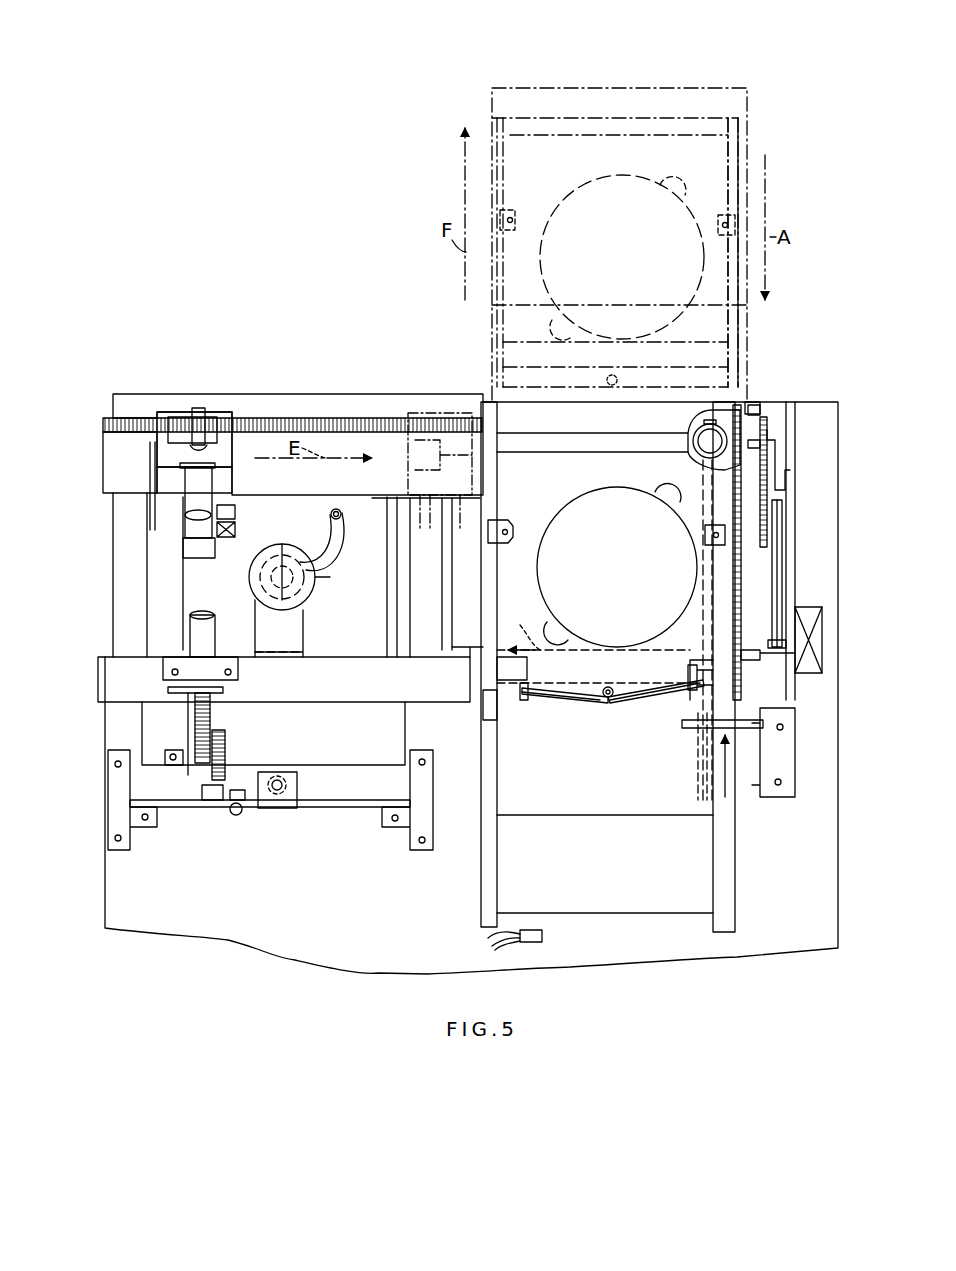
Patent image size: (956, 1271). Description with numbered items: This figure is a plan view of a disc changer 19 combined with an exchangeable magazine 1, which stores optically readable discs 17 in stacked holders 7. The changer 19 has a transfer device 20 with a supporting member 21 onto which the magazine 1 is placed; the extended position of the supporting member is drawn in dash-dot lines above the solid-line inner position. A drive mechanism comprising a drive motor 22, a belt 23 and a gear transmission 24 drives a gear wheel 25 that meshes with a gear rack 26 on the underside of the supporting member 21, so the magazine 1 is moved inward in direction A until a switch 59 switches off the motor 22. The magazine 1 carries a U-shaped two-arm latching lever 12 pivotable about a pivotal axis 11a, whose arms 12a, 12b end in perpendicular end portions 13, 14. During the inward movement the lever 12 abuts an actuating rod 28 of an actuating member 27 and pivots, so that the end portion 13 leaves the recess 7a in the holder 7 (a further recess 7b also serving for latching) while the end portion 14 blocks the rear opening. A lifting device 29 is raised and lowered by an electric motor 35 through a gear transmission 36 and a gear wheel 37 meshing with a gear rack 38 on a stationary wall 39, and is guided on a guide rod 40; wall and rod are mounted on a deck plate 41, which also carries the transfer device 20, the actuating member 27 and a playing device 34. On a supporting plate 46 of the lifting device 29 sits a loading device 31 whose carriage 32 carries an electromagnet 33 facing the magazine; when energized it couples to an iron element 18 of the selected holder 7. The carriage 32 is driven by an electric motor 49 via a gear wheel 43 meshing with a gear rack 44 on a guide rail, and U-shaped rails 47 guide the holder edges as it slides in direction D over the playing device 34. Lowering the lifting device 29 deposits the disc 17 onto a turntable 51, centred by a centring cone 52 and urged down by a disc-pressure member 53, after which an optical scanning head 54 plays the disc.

The magazine 1 is at (497, 117).
The holder 7 is at (722, 262).
The recess in holder 7a is at (510, 672).
The recess in holder 7b is at (655, 700).
The pivotal axis 11a is at (616, 376).
The latching lever 12 is at (600, 705).
The arm of latching lever 12a is at (525, 700).
The arm of latching lever 12b is at (670, 690).
The end portion 13 is at (522, 697).
The end portion 14 is at (700, 676).
The disc 17 is at (556, 288).
The iron element 18 is at (508, 212).
The disc changer 19 is at (388, 300).
The transfer device 20 is at (697, 113).
The supporting member 21 is at (720, 155).
The drive motor 22 is at (810, 670).
The belt 23 is at (780, 586).
The gear transmission 24 is at (775, 477).
The gear wheel 25 is at (700, 436).
The gear rack 26 is at (742, 475).
The actuating member 27 is at (736, 822).
The actuating rod 28 is at (690, 726).
The lifting device 29 is at (326, 707).
The loading device 31 is at (150, 412).
The carriage 32 is at (160, 412).
The electromagnet 33 is at (228, 540).
The playing device 34 is at (200, 578).
The electric motor 35 is at (210, 650).
The gear transmission 36 is at (212, 718).
The gear wheel 37 is at (226, 770).
The gear rack 38 is at (202, 790).
The stationary wall 39 is at (210, 808).
The guide rod 40 is at (275, 792).
The deck plate 41 is at (805, 935).
The gear wheel 43 is at (198, 408).
The gear rack 44 is at (268, 415).
The supporting plate 46 is at (355, 405).
The rail 47 is at (360, 692).
The electric motor 49 is at (220, 512).
The turntable 51 is at (305, 602).
The centring cone 52 is at (306, 583).
The disc-pressure member 53 is at (254, 566).
The optical scanning head 54 is at (330, 514).
The switch 59 is at (545, 936).